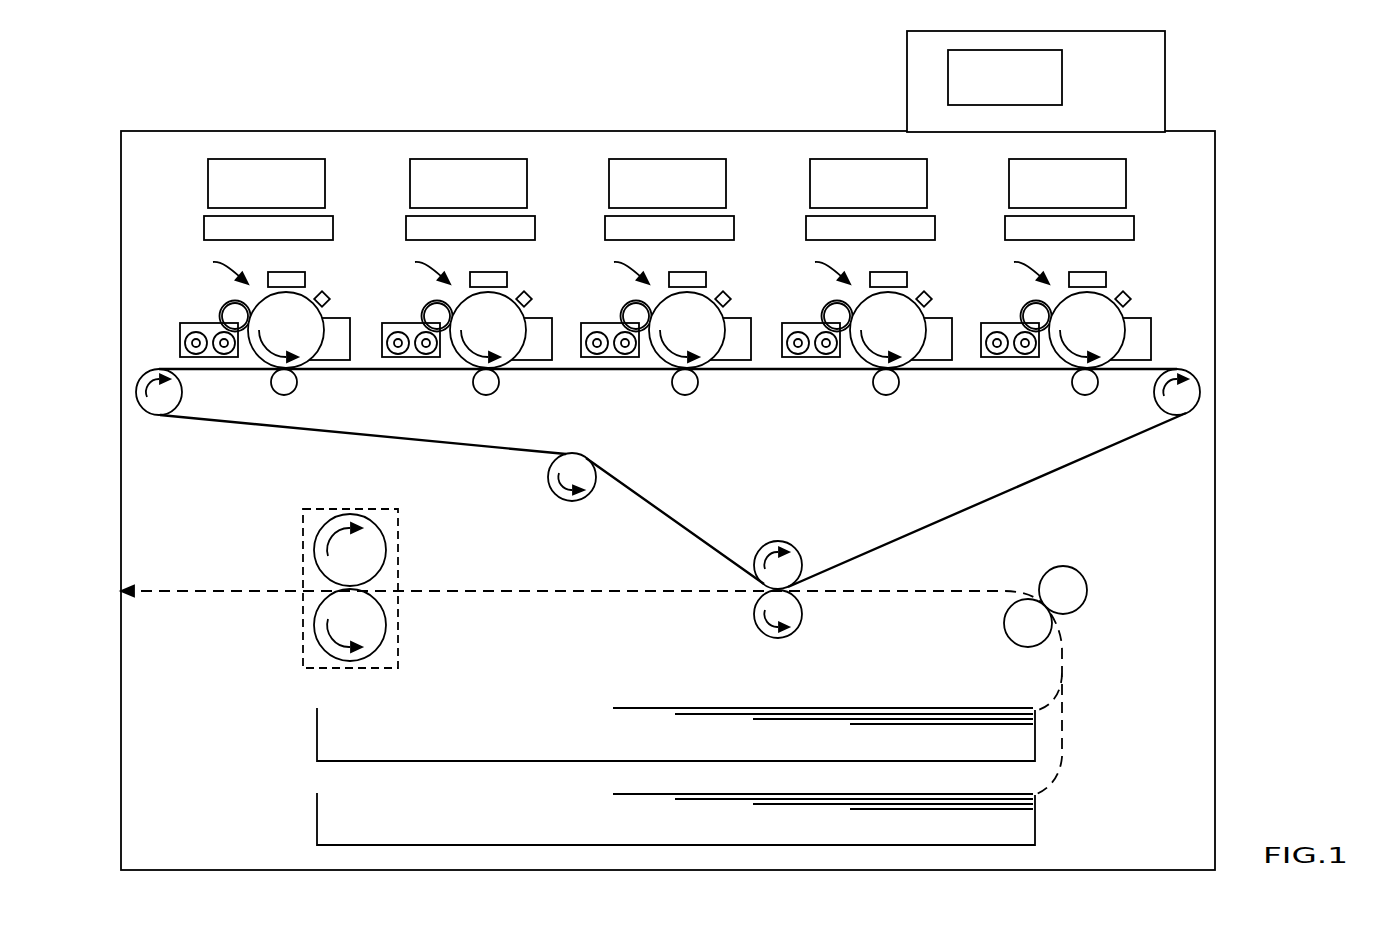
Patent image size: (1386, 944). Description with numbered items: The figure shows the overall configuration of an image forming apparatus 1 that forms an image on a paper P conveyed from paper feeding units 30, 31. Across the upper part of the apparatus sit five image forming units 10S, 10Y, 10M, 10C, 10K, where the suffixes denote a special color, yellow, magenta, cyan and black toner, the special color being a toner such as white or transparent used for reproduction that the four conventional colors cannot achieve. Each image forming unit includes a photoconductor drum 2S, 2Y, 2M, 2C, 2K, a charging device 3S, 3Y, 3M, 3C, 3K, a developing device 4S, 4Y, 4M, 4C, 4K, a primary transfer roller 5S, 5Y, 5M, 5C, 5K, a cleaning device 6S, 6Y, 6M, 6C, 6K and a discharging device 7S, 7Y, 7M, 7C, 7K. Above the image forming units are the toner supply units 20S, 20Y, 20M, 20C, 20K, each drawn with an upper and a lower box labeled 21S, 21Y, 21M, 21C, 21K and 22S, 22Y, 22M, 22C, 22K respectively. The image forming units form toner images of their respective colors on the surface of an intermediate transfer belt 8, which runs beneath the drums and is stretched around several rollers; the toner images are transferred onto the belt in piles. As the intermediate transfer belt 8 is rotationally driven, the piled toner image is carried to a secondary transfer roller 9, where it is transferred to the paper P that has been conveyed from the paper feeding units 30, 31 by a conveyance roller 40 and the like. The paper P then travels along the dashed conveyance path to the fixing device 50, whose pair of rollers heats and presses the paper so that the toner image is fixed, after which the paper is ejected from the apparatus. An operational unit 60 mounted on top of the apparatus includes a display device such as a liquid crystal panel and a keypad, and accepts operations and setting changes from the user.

The image forming apparatus 1 is at (209, 63).
The operational unit 60 is at (1165, 79).
The intermediate transfer belt 8 is at (997, 497).
The secondary transfer roller 9 is at (802, 621).
The conveyance roller 40 is at (1078, 574).
The fixing device 50 is at (368, 509).
The paper feeding unit 30 is at (317, 723).
The paper feeding unit 31 is at (317, 809).
The paper P is at (898, 708).
The photoconductor drum 2S is at (286, 330).
The photoconductor drum 2Y is at (488, 330).
The photoconductor drum 2M is at (687, 330).
The photoconductor drum 2C is at (888, 330).
The photoconductor drum 2K is at (1087, 330).
The charging device 3S is at (295, 272).
The charging device 3Y is at (508, 265).
The charging device 3M is at (710, 265).
The charging device 3C is at (909, 265).
The charging device 3K is at (1108, 265).
The developing device 4S is at (206, 322).
The developing device 4Y is at (417, 317).
The developing device 4M is at (616, 317).
The developing device 4C is at (817, 317).
The developing device 4K is at (1016, 317).
The primary transfer roller 5S is at (272, 389).
The primary transfer roller 5Y is at (466, 393).
The primary transfer roller 5M is at (665, 393).
The primary transfer roller 5C is at (866, 393).
The primary transfer roller 5K is at (1065, 393).
The cleaning device 6S is at (344, 318).
The cleaning device 6Y is at (545, 324).
The cleaning device 6M is at (747, 324).
The cleaning device 6C is at (946, 324).
The cleaning device 6K is at (1145, 324).
The discharging device 7S is at (328, 293).
The discharging device 7Y is at (546, 287).
The discharging device 7M is at (747, 287).
The discharging device 7C is at (946, 287).
The discharging device 7K is at (1145, 287).
The image forming unit 10S is at (211, 266).
The image forming unit 10Y is at (413, 266).
The image forming unit 10M is at (612, 266).
The image forming unit 10C is at (813, 266).
The image forming unit 10K is at (1012, 266).
The toner supply unit 20S is at (305, 195).
The toner supply unit 20Y is at (507, 195).
The toner supply unit 20M is at (708, 195).
The toner supply unit 20C is at (907, 195).
The toner supply unit 20K is at (1106, 195).
The toner container 21S is at (325, 196).
The toner container 21Y is at (507, 184).
The toner container 21M is at (709, 184).
The toner container 21C is at (908, 184).
The toner container 21K is at (1107, 184).
The toner hopper 22S is at (333, 228).
The toner hopper 22Y is at (505, 229).
The toner hopper 22M is at (707, 229).
The toner hopper 22C is at (906, 229).
The toner hopper 22K is at (1105, 229).